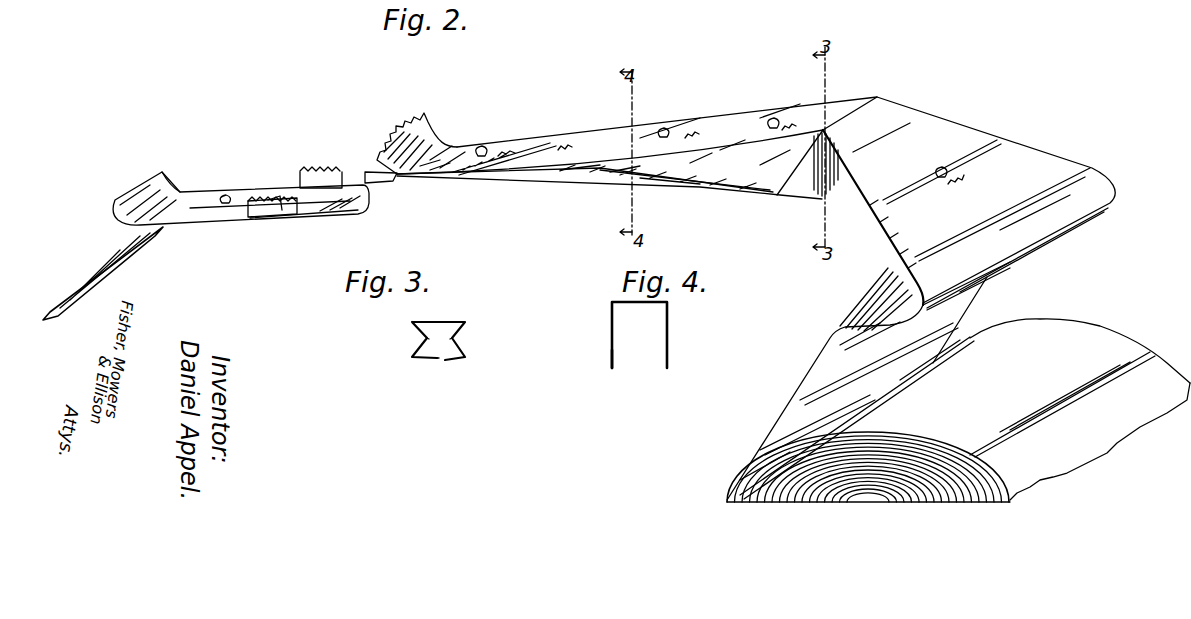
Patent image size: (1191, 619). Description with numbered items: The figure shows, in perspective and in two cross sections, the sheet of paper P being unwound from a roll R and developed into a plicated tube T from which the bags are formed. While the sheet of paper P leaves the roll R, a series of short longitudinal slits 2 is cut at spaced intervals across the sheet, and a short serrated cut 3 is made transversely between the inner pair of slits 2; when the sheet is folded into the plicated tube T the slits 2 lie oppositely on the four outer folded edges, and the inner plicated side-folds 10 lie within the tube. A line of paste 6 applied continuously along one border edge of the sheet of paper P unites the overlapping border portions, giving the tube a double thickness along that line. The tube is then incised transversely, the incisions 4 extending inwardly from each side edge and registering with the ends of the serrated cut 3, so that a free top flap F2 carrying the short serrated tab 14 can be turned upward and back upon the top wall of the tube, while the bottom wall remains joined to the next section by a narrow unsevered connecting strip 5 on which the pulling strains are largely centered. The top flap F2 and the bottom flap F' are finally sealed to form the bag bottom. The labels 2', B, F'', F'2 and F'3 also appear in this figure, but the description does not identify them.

In FIG. 2, the longitudinal slits 2 is at (756, 230).
In FIG. 2, the rail web 2' is at (600, 192).
In FIG. 2, the serrated cut 3 is at (958, 186).
In FIG. 2, the incisions 4 is at (390, 150).
In FIG. 2, the connecting strip 5 is at (780, 123).
In FIG. 2, the line of paste 6 is at (935, 304).
In FIG. 3, the line of paste 6 is at (432, 360).
In FIG. 4, the line of paste 6 is at (611, 361).
In FIG. 3, the inner plicated side-folds 10 is at (425, 338).
In FIG. 2, the serrated tab 14 is at (402, 126).
In FIG. 2, the plicated tube T is at (660, 214).
In FIG. 3, the plicated tube T is at (441, 320).
In FIG. 2, the sheet of paper P is at (808, 387).
In FIG. 4, the sheet of paper P is at (611, 337).
In FIG. 2, the roll R is at (958, 410).
In FIG. 2, the blade B is at (122, 262).
In FIG. 2, the bottom flap F' is at (259, 165).
In FIG. 2, the rack section F'' is at (271, 222).
In FIG. 2, the holder strip F'2 is at (255, 194).
In FIG. 2, the rack section F'3 is at (293, 192).
In FIG. 2, the top flap F2 is at (428, 142).